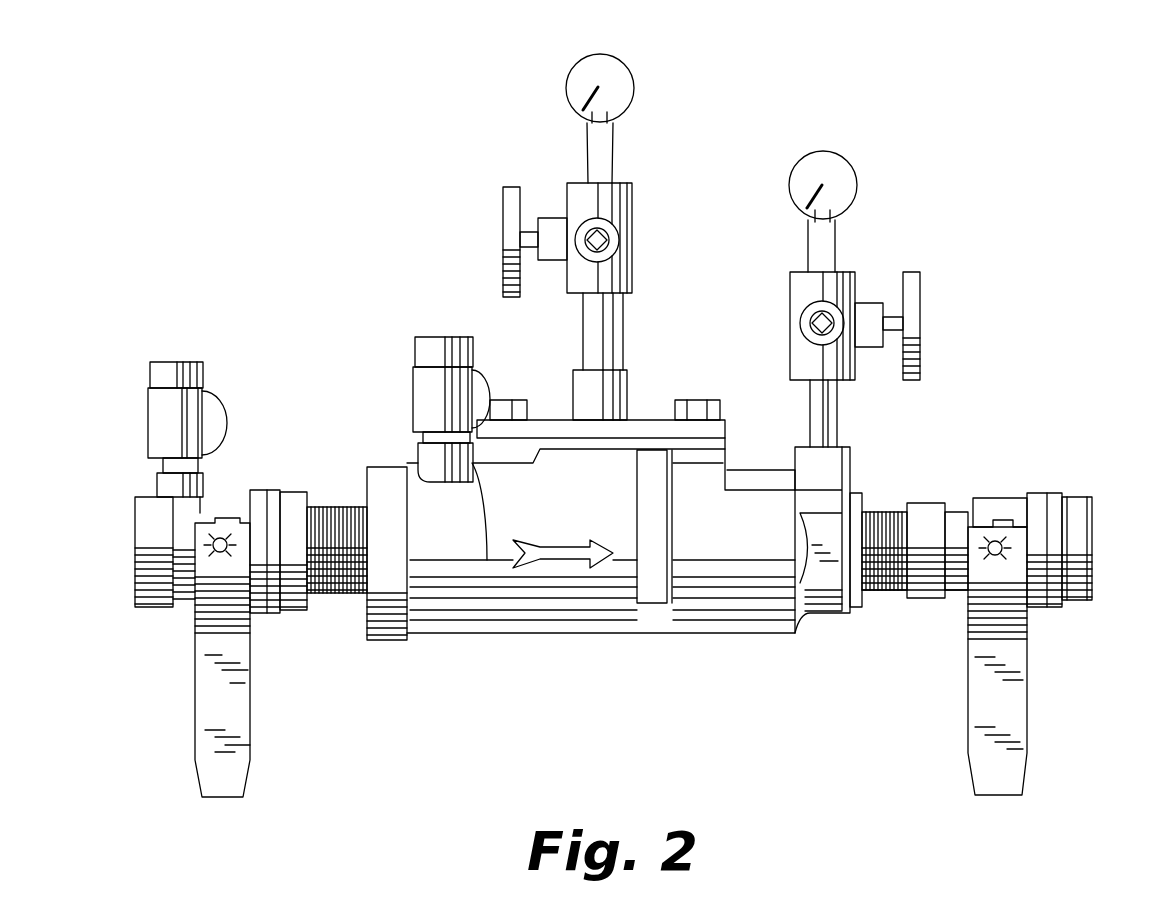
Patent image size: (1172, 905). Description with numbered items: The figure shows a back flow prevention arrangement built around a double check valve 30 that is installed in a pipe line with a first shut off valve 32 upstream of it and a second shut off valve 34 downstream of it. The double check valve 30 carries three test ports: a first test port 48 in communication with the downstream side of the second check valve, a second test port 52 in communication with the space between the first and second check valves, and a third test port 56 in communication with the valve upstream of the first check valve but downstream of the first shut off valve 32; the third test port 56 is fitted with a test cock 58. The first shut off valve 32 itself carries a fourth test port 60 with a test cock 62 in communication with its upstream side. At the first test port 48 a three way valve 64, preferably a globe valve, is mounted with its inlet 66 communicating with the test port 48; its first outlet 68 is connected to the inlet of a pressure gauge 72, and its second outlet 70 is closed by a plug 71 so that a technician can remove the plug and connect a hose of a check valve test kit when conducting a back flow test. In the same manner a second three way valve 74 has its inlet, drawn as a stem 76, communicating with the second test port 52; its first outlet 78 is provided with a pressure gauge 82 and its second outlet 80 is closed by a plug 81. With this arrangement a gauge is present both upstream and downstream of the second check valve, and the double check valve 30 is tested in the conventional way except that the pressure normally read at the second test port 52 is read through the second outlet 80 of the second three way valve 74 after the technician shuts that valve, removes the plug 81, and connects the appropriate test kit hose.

The double check valve 30 is at (602, 635).
The first shut off valve 32 is at (282, 608).
The second shut off valve 34 is at (1003, 498).
The first test port 48 is at (852, 457).
The second test port 52 is at (575, 382).
The third test port 56 is at (417, 450).
The test cock 58 is at (413, 345).
The fourth test port 60 is at (207, 482).
The test cock 62 is at (205, 370).
The three way valve 64 is at (857, 285).
The inlet 66 is at (797, 383).
The first outlet 68 is at (843, 273).
The second outlet 70 is at (807, 310).
The plug 71 is at (810, 321).
The pressure gauge 72 is at (838, 165).
The second three way valve 74 is at (627, 230).
The stem 76 is at (620, 297).
The first outlet 78 is at (623, 187).
The second outlet 80 is at (583, 220).
The plug 81 is at (610, 243).
The pressure gauge 82 is at (613, 65).